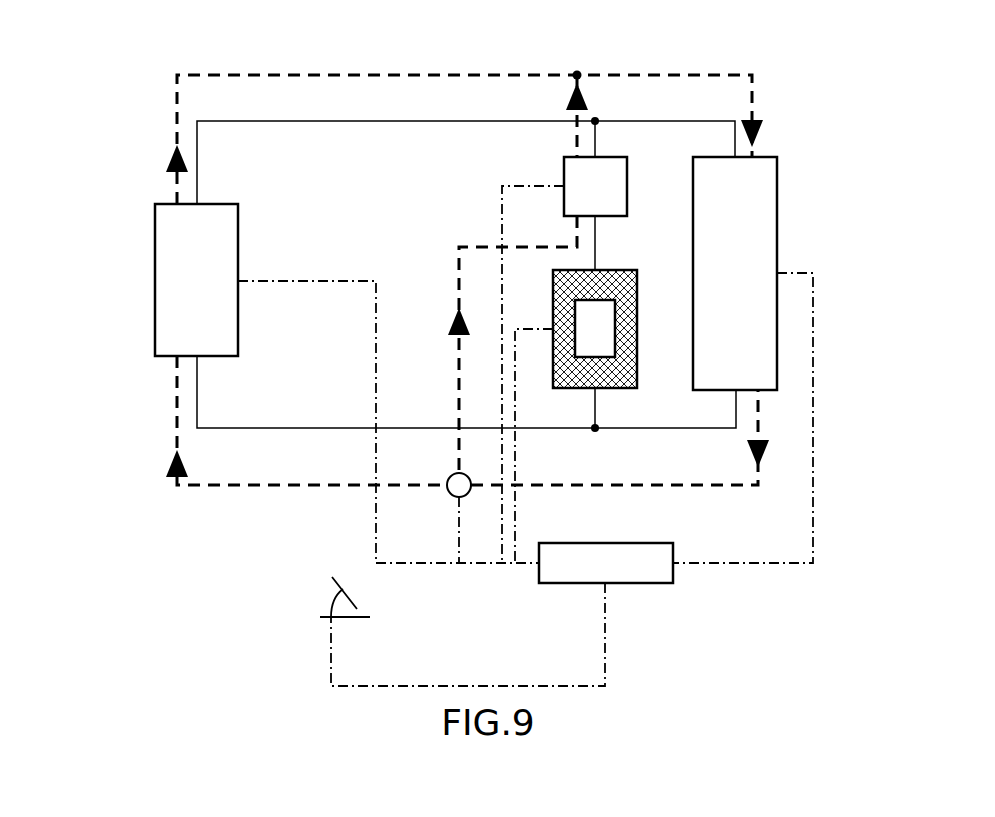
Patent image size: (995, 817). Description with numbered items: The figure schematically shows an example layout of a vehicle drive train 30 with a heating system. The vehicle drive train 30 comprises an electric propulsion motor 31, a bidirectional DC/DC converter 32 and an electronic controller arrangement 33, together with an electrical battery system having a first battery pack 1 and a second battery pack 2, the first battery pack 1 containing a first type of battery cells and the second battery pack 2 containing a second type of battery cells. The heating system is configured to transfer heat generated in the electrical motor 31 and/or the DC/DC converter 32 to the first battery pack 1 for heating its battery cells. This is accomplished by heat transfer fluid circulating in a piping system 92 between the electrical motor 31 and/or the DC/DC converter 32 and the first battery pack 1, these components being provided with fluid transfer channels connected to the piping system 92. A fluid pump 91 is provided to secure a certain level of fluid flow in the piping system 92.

The vehicle drive train 30 is at (126, 75).
The electric propulsion motor 31 is at (155, 250).
The bidirectional DC/DC converter 32 is at (610, 183).
The electronic controller arrangement 33 is at (631, 578).
The first battery pack 1 is at (738, 192).
The second battery pack 2 is at (600, 320).
The fluid pump 91 is at (450, 494).
The piping system 92 is at (700, 74).